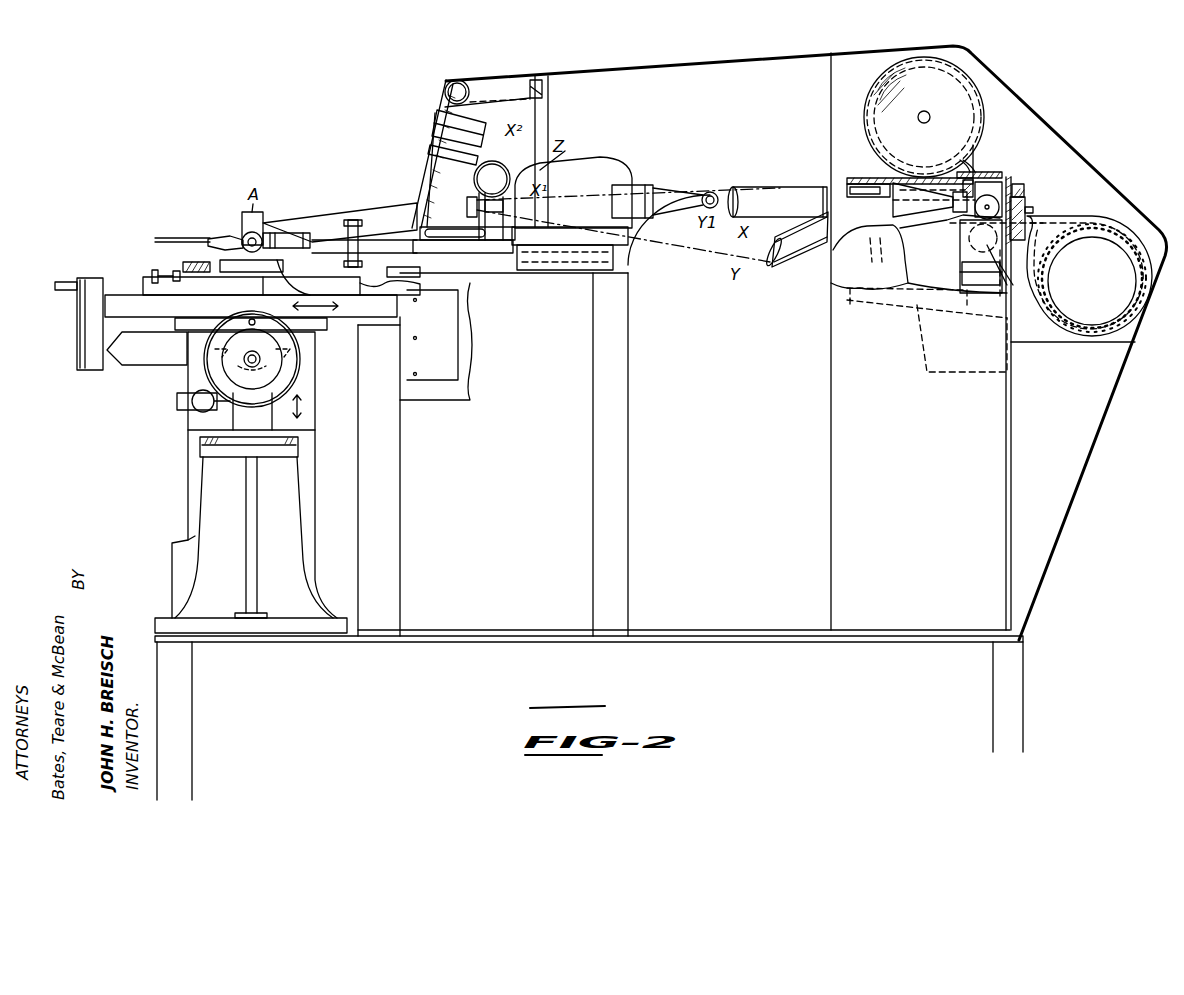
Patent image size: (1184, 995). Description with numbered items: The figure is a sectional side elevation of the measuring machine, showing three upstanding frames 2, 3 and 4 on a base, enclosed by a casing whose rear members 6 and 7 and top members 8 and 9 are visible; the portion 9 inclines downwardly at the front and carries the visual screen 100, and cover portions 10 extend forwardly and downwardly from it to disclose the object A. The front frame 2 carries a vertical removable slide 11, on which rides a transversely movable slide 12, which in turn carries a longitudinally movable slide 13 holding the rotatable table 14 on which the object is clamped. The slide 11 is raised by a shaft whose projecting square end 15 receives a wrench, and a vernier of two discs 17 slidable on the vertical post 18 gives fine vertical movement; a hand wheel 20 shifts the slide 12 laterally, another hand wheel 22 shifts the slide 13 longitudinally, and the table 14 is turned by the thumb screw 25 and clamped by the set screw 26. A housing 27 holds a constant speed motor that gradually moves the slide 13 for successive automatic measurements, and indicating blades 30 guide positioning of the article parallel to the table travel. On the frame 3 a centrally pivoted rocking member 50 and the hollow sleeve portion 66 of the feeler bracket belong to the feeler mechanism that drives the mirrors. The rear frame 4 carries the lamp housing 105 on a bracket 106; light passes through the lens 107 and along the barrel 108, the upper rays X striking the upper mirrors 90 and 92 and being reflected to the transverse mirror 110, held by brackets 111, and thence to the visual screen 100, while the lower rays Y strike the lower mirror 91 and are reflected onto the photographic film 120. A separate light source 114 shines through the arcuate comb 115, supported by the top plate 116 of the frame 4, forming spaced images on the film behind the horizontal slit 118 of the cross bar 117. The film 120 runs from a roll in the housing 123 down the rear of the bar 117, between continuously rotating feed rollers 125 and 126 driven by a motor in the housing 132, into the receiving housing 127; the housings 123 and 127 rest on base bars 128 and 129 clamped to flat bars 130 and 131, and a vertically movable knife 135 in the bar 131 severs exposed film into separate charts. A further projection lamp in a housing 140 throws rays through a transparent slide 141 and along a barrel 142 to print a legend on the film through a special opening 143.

The upstanding frame 2 is at (251, 545).
The upstanding frame 3 is at (684, 454).
The upstanding frame 4 is at (983, 341).
The rear member 6 is at (1105, 412).
The rear member 7 is at (1140, 196).
The top member 8 is at (692, 67).
The top member portion 9 is at (430, 176).
The cover portions 10 is at (310, 218).
The vertical removable slide 11 is at (188, 421).
The transversely movable slide 12 is at (300, 346).
The longitudinally movable slide 13 is at (251, 330).
The rotatable table 14 is at (230, 262).
The projecting square end 15 is at (177, 400).
The discs 17 is at (298, 450).
The vertical post 18 is at (250, 497).
The hand wheel 20 is at (290, 372).
The hand wheel 22 is at (77, 315).
The thumb screw 25 is at (183, 265).
The set screw 26 is at (150, 272).
The motor housing 27 is at (436, 341).
The indicating blades 30 is at (158, 238).
The rocking member 50 is at (345, 243).
The hollow sleeve portion 66 is at (242, 236).
The upper mirror 90 is at (475, 196).
The lower mirror 91 is at (480, 214).
The upper mirror 92 is at (281, 277).
The visual screen 100 is at (435, 128).
The lamp housing 105 is at (848, 272).
The bracket 106 is at (890, 318).
The lens 107 is at (876, 258).
The projecting barrel 108 is at (793, 262).
The transverse mirror 110 is at (710, 191).
The brackets 111 is at (637, 250).
The source of light 114 is at (492, 179).
The arcuate comb 115 is at (848, 178).
The top plate 116 is at (868, 179).
The cross bar 117 is at (942, 178).
The horizontal slit 118 is at (960, 225).
The photographic film 120 is at (975, 148).
The film roll housing 123 is at (984, 117).
The feed roller 125 is at (995, 200).
The feed roller 126 is at (1008, 292).
The receiving housing 127 is at (1080, 336).
The base bar 128 is at (1003, 170).
The base bar 129 is at (1034, 210).
The flat bar 130 is at (1030, 162).
The flat bar 131 is at (1012, 240).
The motor housing 132 is at (960, 262).
The knife 135 is at (1026, 192).
The projection lamp housing 140 is at (612, 150).
The transparent slide 141 is at (628, 182).
The barrel 142 is at (790, 187).
The special opening 143 is at (991, 198).